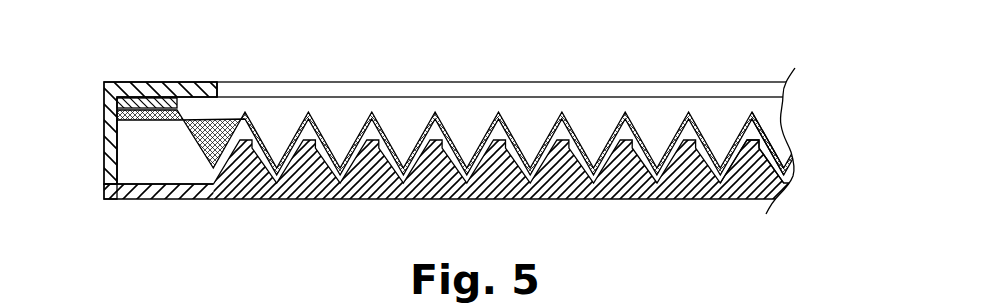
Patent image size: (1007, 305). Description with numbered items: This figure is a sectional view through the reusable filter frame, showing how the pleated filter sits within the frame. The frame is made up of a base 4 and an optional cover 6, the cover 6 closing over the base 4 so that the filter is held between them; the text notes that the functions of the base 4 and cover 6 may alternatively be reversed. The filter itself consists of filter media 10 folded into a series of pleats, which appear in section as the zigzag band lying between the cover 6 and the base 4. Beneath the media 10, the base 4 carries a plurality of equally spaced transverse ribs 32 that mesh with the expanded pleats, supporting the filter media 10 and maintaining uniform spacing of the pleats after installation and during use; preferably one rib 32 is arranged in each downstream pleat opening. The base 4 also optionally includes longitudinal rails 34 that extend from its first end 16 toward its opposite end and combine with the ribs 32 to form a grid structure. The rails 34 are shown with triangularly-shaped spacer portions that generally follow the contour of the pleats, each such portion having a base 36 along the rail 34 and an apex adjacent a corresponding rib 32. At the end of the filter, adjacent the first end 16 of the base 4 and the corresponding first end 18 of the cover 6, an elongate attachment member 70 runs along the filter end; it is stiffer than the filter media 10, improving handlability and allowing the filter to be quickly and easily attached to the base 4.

The base 4 is at (200, 198).
The cover 6 is at (318, 82).
The filter media 10 is at (193, 150).
The first end 16 is at (103, 186).
The first end 18 is at (103, 147).
The transverse ribs 32 is at (388, 140).
The longitudinal rails 34 is at (375, 190).
The base 36 is at (765, 184).
The attachment members 70 is at (163, 97).